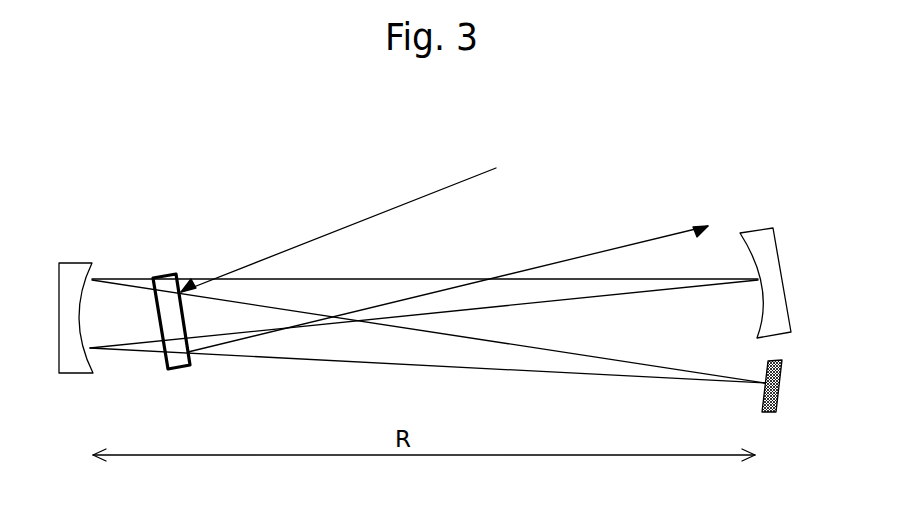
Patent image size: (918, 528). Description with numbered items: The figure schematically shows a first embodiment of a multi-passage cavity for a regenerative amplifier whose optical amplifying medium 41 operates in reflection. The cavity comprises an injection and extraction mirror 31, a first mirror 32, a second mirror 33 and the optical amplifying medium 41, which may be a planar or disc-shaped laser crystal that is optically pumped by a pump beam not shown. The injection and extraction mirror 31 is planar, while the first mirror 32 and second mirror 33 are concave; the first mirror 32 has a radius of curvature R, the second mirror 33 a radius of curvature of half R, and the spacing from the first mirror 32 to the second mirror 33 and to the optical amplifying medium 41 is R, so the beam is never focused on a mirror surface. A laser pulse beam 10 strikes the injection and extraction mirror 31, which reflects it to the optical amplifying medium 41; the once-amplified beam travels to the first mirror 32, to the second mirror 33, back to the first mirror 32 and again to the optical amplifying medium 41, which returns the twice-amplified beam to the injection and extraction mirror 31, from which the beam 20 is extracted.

The laser pulse beam 10 is at (318, 238).
The beam of laser pulses amplified twice 20 is at (573, 258).
The injection and extraction mirror 31 is at (178, 367).
The first mirror 32 is at (71, 266).
The second mirror 33 is at (757, 228).
The optical amplifying medium 41 is at (755, 397).